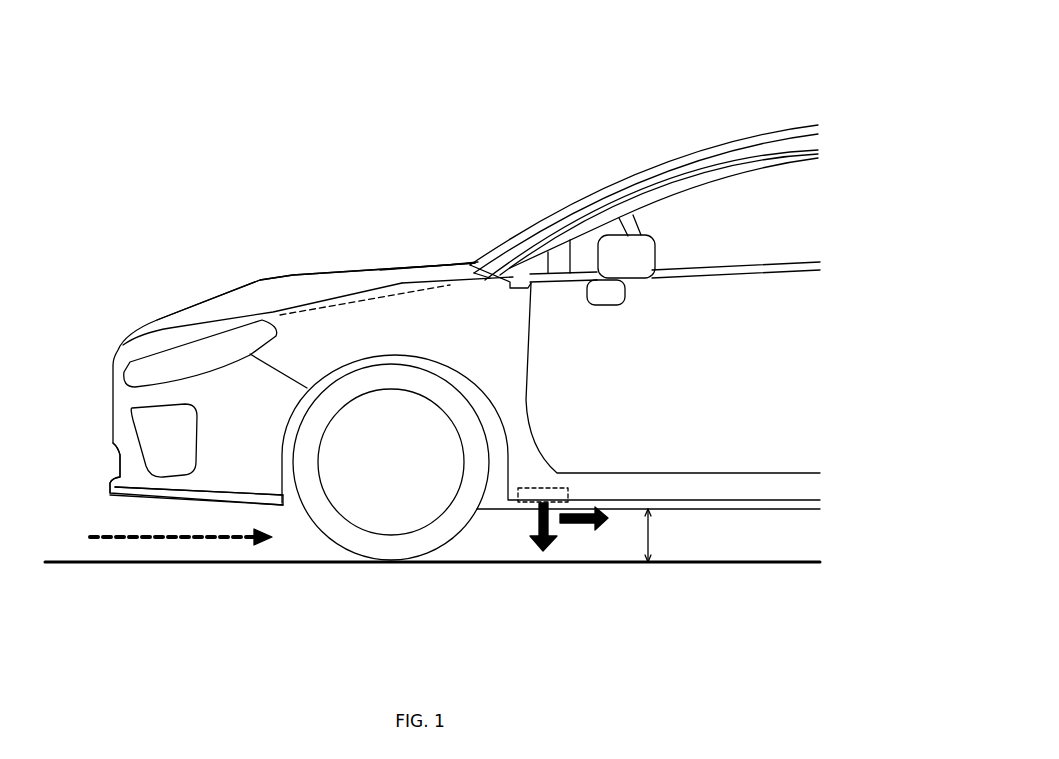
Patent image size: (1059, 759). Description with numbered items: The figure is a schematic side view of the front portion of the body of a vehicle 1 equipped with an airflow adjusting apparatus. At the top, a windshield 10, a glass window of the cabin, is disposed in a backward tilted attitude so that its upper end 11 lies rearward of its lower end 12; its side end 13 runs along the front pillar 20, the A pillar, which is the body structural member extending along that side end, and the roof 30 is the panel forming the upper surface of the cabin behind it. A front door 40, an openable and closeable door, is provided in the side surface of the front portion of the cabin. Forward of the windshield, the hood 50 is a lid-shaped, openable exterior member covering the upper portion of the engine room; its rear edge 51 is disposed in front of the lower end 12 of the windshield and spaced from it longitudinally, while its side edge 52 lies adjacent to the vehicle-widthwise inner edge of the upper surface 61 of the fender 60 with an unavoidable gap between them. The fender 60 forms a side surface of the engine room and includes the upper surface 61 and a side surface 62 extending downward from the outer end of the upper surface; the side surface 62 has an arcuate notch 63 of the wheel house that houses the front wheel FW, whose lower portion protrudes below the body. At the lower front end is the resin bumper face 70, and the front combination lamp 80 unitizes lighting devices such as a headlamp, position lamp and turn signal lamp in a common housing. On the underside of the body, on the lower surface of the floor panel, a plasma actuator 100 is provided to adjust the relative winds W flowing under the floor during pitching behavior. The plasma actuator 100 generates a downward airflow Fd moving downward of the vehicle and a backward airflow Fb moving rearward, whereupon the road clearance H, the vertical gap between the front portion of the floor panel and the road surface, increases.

The vehicle 1 is at (215, 130).
The windshield 10 is at (625, 180).
The upper end 11 is at (682, 172).
The lower end 12 is at (475, 345).
The side end 13 is at (648, 178).
The front pillar 20 is at (818, 142).
The roof 30 is at (773, 130).
The front door 40 is at (720, 380).
The hood 50 is at (293, 275).
The rear edge 51 is at (447, 265).
The side edge 52 is at (273, 312).
The fender 60 is at (370, 333).
The upper surface 61 is at (402, 283).
The side surface 62 is at (468, 267).
The arcuate notch 63 is at (397, 358).
The bumper face 70 is at (213, 470).
The front combination lamp 80 is at (157, 347).
The plasma actuator 100 is at (552, 505).
The front wheel FW is at (353, 552).
The relative winds W is at (165, 528).
The downward airflow Fd is at (527, 527).
The backward airflow Fb is at (584, 532).
The road clearance H is at (661, 535).